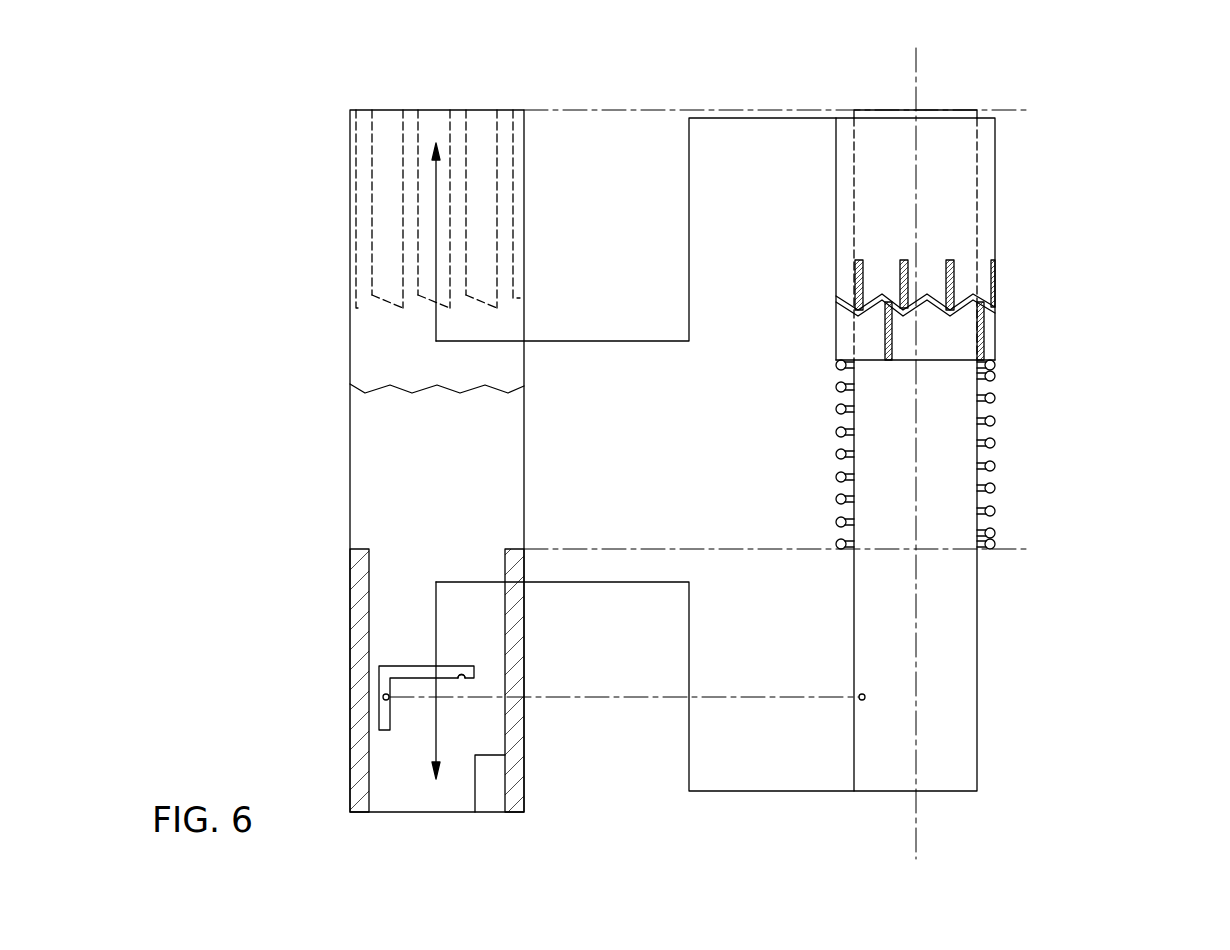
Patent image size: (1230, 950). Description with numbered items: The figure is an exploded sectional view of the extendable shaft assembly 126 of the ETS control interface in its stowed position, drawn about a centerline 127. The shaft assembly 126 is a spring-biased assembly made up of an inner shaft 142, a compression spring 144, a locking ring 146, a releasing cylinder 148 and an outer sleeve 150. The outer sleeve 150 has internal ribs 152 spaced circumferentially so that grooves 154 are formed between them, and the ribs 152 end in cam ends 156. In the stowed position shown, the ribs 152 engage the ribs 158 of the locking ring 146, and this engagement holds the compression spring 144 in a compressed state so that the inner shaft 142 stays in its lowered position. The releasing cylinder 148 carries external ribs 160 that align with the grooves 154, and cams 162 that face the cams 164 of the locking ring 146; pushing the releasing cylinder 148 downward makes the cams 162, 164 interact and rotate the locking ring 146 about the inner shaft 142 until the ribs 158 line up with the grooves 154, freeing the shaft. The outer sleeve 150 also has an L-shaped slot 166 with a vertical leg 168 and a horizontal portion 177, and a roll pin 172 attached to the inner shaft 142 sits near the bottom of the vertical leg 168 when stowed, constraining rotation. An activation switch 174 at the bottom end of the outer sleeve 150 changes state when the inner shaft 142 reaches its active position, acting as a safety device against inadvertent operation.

The extendable shaft assembly 126 is at (1167, 146).
The centerline axis 127 is at (916, 72).
The inner shaft 142 is at (853, 183).
The compression spring 144 is at (996, 468).
The locking ring 146 is at (996, 352).
The releasing cylinder 148 is at (996, 172).
The outer sleeve 150 is at (524, 483).
The internal ribs 152 is at (386, 110).
The grooves 154 is at (412, 108).
The cam ends 156 is at (378, 300).
The ribs of the locking ring 158 is at (888, 358).
The external ribs 160 is at (905, 260).
The cams of the releasing cylinder 162 is at (880, 298).
The cams of the locking ring 164 is at (871, 310).
The L-shaped slot 166 is at (446, 668).
The vertical leg 168 is at (382, 696).
The roll pin 172 is at (864, 693).
The activation switch 174 is at (494, 781).
The latch bracket 177 is at (409, 665).